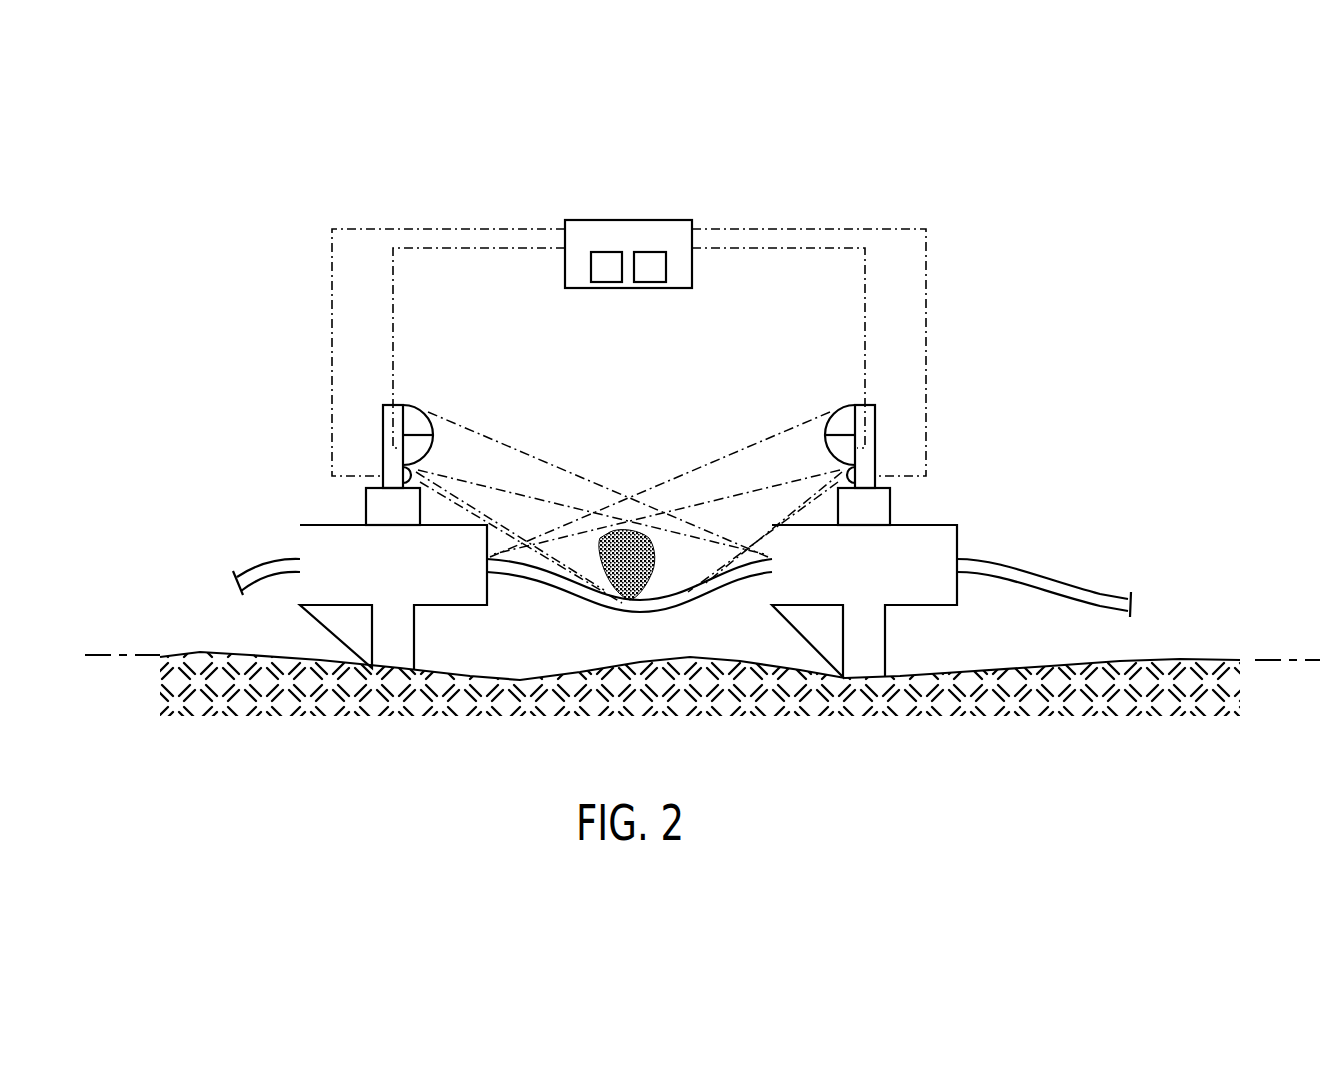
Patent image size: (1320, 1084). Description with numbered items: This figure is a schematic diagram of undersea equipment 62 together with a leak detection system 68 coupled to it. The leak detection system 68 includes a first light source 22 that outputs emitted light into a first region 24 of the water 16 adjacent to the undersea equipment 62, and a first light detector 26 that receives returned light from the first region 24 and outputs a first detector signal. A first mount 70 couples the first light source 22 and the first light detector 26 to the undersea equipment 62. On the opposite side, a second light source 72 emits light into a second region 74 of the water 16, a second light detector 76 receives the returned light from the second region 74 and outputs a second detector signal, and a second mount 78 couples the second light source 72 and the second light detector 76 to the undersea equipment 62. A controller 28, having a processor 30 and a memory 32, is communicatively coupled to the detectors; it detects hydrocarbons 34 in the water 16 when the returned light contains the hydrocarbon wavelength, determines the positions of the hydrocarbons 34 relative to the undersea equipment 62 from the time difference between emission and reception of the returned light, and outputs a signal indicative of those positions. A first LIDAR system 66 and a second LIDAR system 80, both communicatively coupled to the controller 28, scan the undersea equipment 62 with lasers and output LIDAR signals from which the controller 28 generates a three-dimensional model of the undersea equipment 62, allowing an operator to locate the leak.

The water 16 is at (561, 642).
The first light source 22 is at (847, 405).
The first region 24 is at (706, 463).
The first light detector 26 is at (830, 452).
The controller 28 is at (630, 220).
The processor 30 is at (591, 266).
The memory 32 is at (666, 266).
The hydrocarbons 34 is at (662, 570).
The undersea equipment 62 is at (1116, 517).
The first LIDAR system 66 is at (855, 474).
The leak detection system 68 is at (803, 192).
The first mount 70 is at (890, 500).
The second light source 72 is at (412, 405).
The second region 74 is at (551, 463).
The second light detector 76 is at (430, 452).
The second mount 78 is at (366, 500).
The second LIDAR system 80 is at (405, 474).